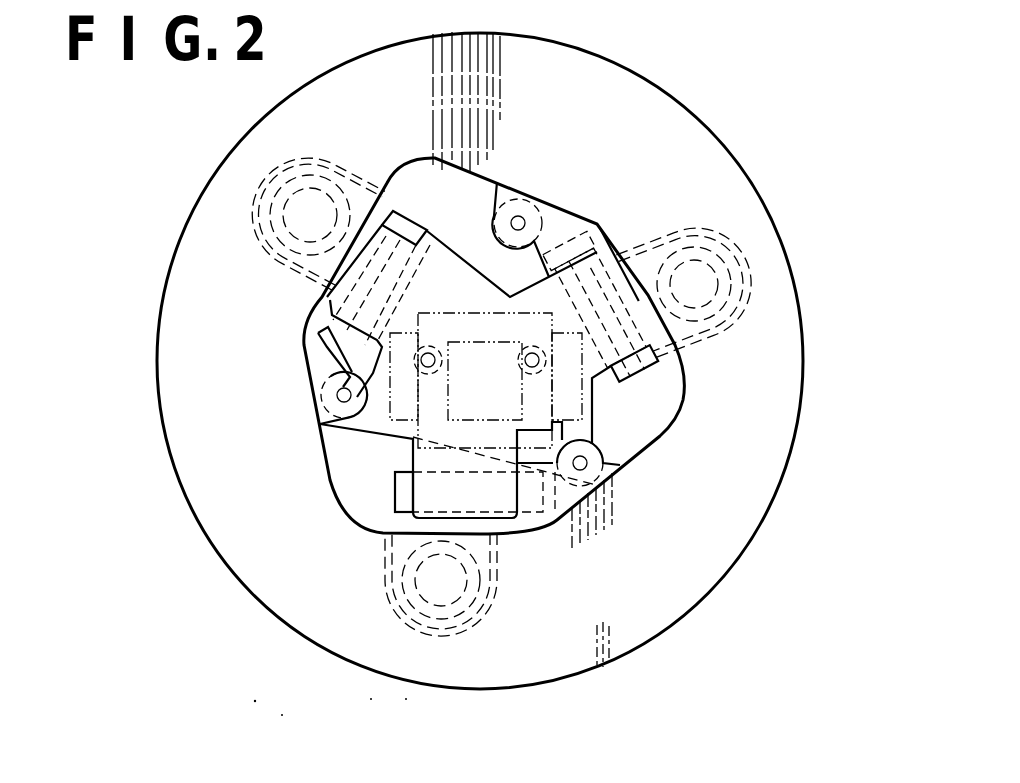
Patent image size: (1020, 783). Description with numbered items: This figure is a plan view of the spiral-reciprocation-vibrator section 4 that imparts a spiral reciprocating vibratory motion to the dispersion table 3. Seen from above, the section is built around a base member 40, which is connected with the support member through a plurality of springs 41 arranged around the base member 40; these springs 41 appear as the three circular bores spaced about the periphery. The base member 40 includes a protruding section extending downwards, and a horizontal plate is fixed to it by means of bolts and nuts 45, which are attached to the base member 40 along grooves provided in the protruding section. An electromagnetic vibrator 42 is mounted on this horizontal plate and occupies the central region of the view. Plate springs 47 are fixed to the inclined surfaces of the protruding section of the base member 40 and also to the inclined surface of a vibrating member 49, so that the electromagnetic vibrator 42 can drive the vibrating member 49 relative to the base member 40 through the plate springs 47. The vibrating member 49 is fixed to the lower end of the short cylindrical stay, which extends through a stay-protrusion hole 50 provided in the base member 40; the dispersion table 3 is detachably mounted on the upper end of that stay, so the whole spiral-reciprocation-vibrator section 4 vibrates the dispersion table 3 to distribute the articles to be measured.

The base member 40 is at (786, 352).
The springs 41 is at (322, 200).
The electromagnetic vibrator 42 is at (420, 462).
The bolts and nuts 45 is at (518, 220).
The plate springs 47 is at (317, 293).
The vibrating member 49 is at (470, 283).
The stay-protrusion hole 50 is at (666, 400).
The dispersion table 3 is at (780, 250).
The spiral-reciprocation-vibrator section 4 is at (722, 138).